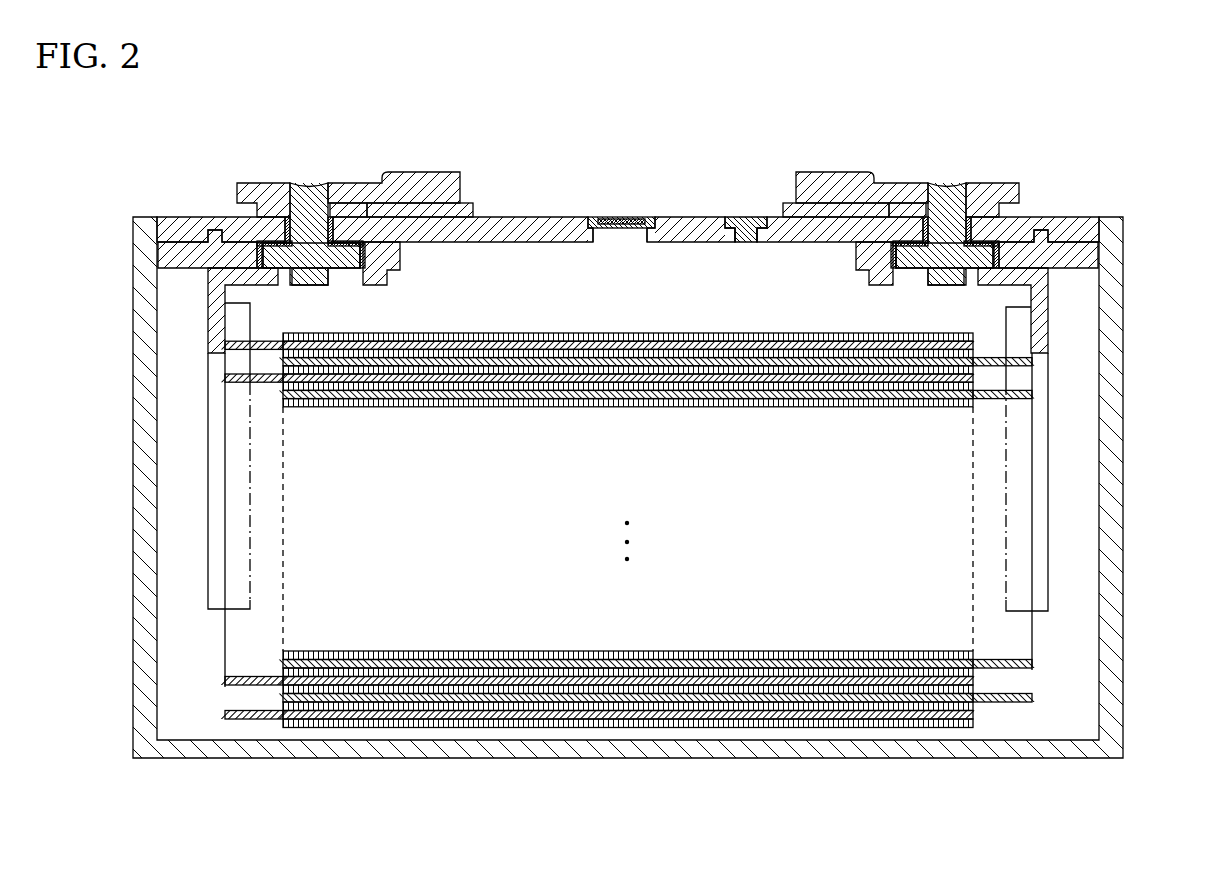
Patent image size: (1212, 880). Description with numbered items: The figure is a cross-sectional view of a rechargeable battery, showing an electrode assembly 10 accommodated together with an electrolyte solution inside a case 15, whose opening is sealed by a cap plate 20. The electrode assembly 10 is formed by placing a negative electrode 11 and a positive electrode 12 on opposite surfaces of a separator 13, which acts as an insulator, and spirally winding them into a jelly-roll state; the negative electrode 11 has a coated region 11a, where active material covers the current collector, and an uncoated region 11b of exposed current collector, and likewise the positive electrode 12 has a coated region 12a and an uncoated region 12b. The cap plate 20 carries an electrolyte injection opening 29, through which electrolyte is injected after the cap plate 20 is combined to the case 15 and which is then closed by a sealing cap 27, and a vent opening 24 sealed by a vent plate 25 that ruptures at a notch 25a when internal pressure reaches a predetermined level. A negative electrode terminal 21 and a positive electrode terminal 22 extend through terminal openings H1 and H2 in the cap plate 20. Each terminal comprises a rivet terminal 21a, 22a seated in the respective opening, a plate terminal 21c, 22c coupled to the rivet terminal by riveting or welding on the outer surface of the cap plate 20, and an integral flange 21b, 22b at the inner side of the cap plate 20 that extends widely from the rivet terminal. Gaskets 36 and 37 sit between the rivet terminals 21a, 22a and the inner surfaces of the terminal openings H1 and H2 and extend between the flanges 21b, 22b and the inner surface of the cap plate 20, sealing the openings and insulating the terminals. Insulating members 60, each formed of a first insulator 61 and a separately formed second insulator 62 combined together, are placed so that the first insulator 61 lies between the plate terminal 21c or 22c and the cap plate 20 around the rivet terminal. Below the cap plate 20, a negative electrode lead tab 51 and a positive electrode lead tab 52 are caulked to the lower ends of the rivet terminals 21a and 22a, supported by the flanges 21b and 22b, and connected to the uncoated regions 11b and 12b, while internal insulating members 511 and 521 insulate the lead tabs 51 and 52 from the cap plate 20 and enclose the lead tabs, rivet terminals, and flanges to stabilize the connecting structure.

The electrode assembly 10 is at (606, 592).
The negative electrode 11 is at (606, 596).
The coated region 11a is at (377, 720).
The uncoated region 11b is at (407, 805).
The positive electrode 12 is at (606, 604).
The coated region 12a is at (890, 703).
The uncoated region 12b is at (865, 805).
The separator 13 is at (657, 725).
The case 15 is at (1108, 425).
The cap plate 20 is at (503, 216).
The negative electrode terminal 21 is at (333, 286).
The rivet terminal 21a is at (303, 282).
The flange 21b is at (350, 270).
The plate terminal 21c is at (238, 183).
The positive electrode terminal 22 is at (923, 286).
The rivet terminal 22a is at (953, 282).
The flange 22b is at (906, 270).
The plate terminal 22c is at (1018, 183).
The vent opening 24 is at (628, 232).
The vent plate 25 is at (619, 192).
The notch 25a is at (607, 217).
The sealing cap 27 is at (744, 216).
The electrolyte injection opening 29 is at (744, 243).
The gasket 36 is at (265, 222).
The gasket 37 is at (1088, 222).
The negative electrode lead tab 51 is at (217, 323).
The internal insulating member 511 is at (172, 258).
The positive electrode lead tab 52 is at (1039, 323).
The internal insulating member 521 is at (1087, 259).
The insulating member 60 is at (628, 145).
The first insulator 61 is at (347, 208).
The second insulator 62 is at (348, 113).
The terminal opening H1 is at (291, 225).
The terminal opening H2 is at (962, 227).